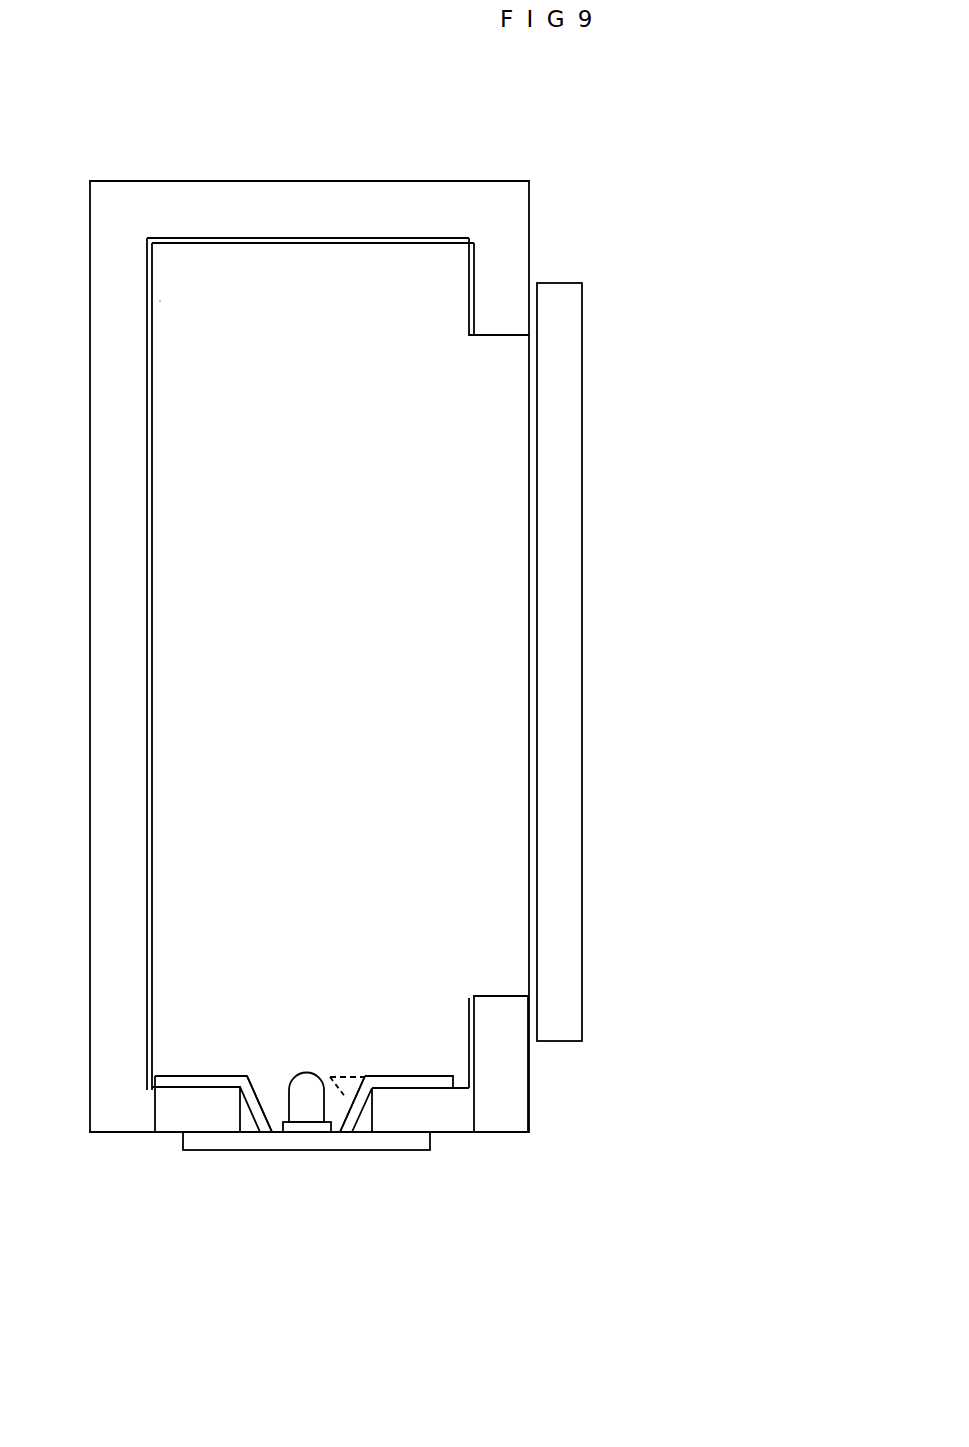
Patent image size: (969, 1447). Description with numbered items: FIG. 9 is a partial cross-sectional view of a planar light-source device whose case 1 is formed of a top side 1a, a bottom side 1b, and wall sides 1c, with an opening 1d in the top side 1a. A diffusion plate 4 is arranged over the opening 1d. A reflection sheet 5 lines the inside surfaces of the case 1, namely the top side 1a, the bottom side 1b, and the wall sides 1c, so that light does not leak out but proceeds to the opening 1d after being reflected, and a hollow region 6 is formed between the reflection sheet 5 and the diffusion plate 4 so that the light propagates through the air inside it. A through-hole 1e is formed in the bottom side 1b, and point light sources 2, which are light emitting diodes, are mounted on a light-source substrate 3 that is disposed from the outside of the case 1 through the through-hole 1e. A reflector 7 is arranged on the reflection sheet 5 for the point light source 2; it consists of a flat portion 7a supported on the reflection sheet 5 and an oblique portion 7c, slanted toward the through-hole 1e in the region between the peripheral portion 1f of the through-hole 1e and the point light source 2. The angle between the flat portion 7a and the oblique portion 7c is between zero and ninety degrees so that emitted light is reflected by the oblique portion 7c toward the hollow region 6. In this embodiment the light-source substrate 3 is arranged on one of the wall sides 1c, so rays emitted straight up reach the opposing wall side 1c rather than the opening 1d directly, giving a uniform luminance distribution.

The case 1 is at (100, 1043).
The top side 1a is at (472, 1075).
The bottom side 1b is at (147, 295).
The wall sides 1c is at (282, 238).
The opening 1d is at (505, 415).
The through-hole 1e is at (335, 1112).
The peripheral portion 1f is at (365, 1113).
The point light sources 2 is at (313, 1113).
The light-source substrate 3 is at (433, 1150).
The diffusion plate 4 is at (565, 383).
The reflection sheet 5 is at (330, 240).
The hollow region 6 is at (218, 348).
The reflector 7 is at (436, 1078).
The flat portion 7a is at (172, 1077).
The oblique portion 7c is at (276, 1133).